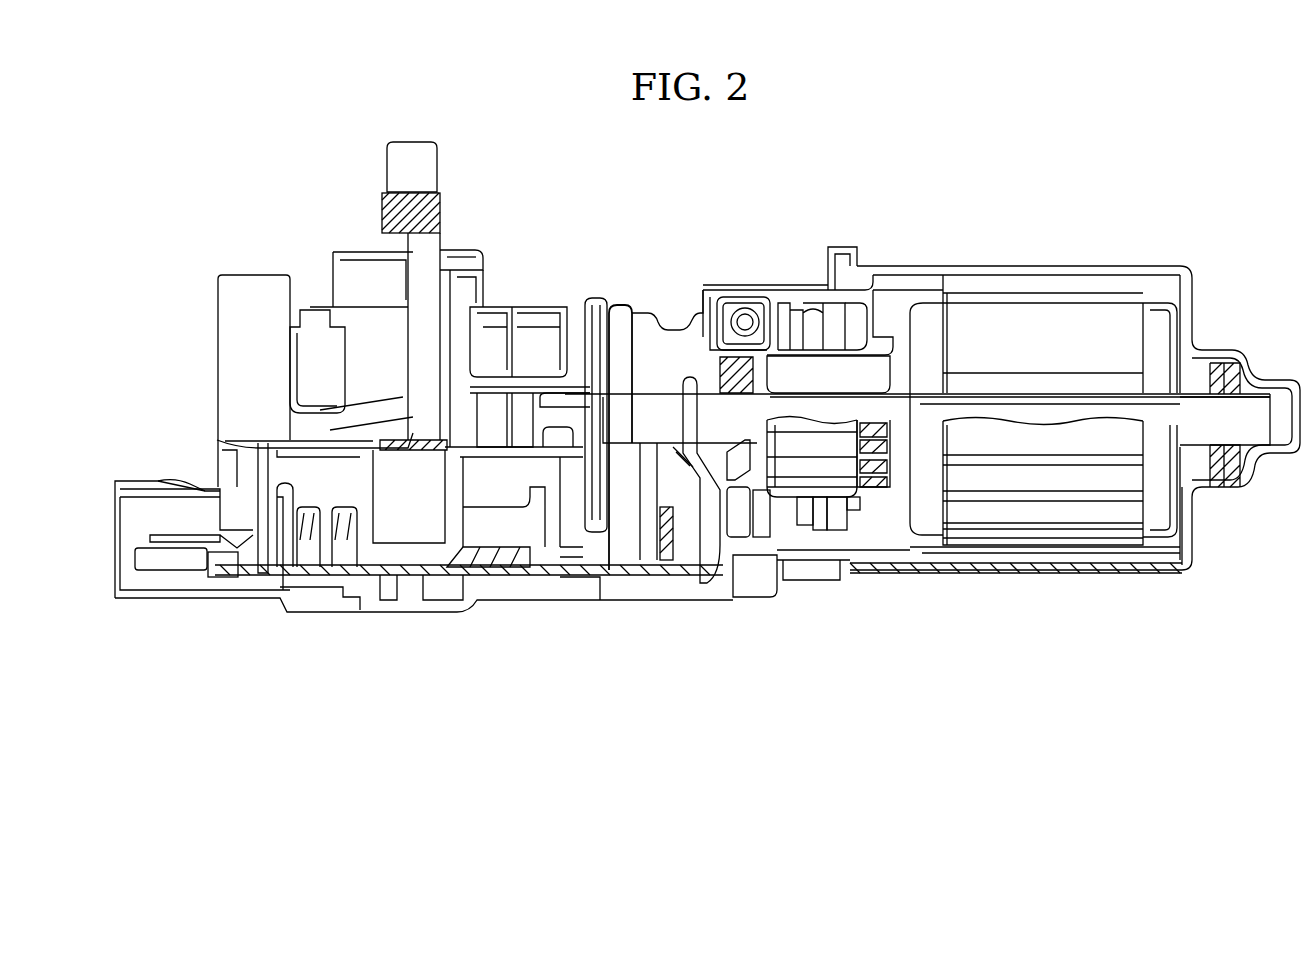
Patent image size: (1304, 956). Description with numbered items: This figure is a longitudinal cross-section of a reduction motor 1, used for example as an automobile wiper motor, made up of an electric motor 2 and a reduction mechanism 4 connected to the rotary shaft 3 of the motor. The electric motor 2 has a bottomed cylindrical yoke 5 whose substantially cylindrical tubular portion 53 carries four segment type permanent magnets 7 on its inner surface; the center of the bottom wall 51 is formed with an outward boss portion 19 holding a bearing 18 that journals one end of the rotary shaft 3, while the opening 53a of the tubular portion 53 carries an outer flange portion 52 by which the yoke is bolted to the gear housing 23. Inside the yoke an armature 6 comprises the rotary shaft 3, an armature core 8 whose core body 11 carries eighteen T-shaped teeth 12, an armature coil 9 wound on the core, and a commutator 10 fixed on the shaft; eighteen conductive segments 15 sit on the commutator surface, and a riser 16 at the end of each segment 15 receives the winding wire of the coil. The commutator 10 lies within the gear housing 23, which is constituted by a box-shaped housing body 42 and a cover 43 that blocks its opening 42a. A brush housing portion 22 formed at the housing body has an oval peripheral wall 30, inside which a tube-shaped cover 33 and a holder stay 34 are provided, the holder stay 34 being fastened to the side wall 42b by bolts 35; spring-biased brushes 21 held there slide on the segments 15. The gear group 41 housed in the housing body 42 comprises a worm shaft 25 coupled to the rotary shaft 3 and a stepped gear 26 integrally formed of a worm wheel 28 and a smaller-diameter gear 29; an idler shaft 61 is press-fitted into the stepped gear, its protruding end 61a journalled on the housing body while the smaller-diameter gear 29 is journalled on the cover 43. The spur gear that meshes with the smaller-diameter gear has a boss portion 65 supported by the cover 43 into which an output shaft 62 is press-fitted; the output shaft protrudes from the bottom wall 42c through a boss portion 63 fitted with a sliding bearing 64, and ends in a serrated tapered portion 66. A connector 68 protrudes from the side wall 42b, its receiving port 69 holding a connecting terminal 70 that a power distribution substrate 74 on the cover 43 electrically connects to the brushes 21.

The reduction motor 1 is at (983, 134).
The electric motor 2 is at (1025, 242).
The rotary shaft 3 is at (1200, 398).
The reduction mechanism 4 is at (538, 250).
The yoke 5 is at (1105, 578).
The armature 6 is at (923, 292).
The permanent magnet 7 is at (1042, 553).
The armature core 8 is at (1154, 545).
The armature coil 9 is at (1165, 312).
The commutator 10 is at (857, 505).
The core body 11 is at (987, 377).
The tooth 12 is at (983, 530).
The segment 15 is at (790, 470).
The riser 16 is at (878, 497).
The bearing 18 is at (1248, 455).
The boss portion 19 is at (1258, 375).
The brush 21 is at (815, 517).
The brush housing portion 22 is at (771, 280).
The gear housing 23 is at (200, 348).
The worm shaft 25 is at (492, 400).
The stepped gear 26 is at (585, 550).
The worm wheel 28 is at (548, 410).
The smaller-diameter gear 29 is at (647, 550).
The peripheral wall 30 is at (800, 553).
The cover 33 is at (795, 305).
The holder stay 34 is at (835, 518).
The bolt 35 is at (793, 333).
The gear group 41 is at (523, 522).
The housing body 42 is at (218, 415).
The opening 42a is at (705, 545).
The side wall 42b is at (699, 312).
The bottom wall 42c is at (299, 325).
The cover 43 is at (580, 600).
The bottom wall 51 is at (1195, 547).
The outer flange portion 52 is at (855, 250).
The tubular portion 53 is at (1120, 265).
The opening 53a is at (872, 280).
The idler shaft 61 is at (616, 303).
The protruding end 61a is at (592, 298).
The output shaft 62 is at (393, 528).
The boss portion 63 is at (468, 248).
The sliding bearing 64 is at (462, 292).
The boss portion 65 is at (433, 563).
The tapered portion 66 is at (440, 207).
The connector 68 is at (152, 598).
The receiving port 69 is at (158, 483).
The connecting terminal 70 is at (177, 542).
The power distribution substrate 74 is at (327, 580).